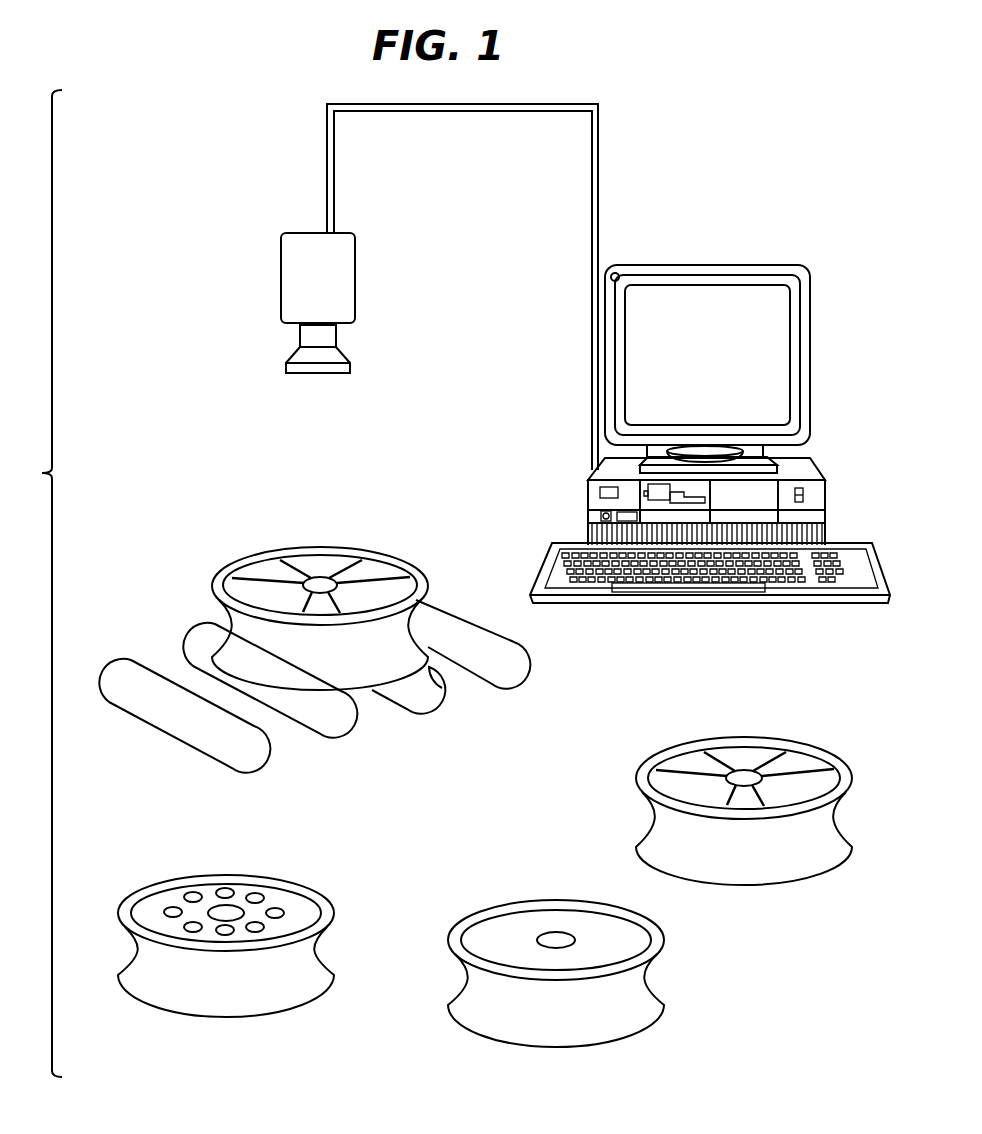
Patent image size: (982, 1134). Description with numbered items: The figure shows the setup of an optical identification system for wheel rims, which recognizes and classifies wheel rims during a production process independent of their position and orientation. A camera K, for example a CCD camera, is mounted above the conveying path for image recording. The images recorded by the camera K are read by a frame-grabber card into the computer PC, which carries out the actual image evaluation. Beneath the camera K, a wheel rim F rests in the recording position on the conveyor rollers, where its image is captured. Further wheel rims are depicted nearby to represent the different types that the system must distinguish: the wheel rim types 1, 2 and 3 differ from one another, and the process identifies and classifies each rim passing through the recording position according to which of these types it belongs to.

The camera K is at (343, 288).
The computer PC is at (797, 473).
The wheel rim in the recording position F is at (327, 567).
The wheel rim type 1 is at (808, 862).
The wheel rim type 2 is at (623, 1012).
The wheel rim type 3 is at (262, 995).